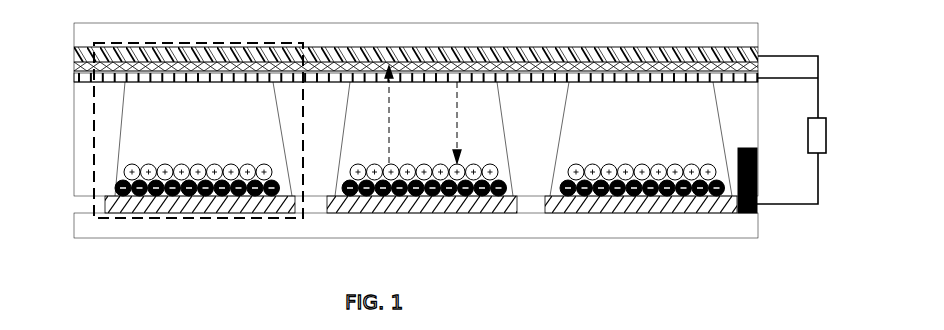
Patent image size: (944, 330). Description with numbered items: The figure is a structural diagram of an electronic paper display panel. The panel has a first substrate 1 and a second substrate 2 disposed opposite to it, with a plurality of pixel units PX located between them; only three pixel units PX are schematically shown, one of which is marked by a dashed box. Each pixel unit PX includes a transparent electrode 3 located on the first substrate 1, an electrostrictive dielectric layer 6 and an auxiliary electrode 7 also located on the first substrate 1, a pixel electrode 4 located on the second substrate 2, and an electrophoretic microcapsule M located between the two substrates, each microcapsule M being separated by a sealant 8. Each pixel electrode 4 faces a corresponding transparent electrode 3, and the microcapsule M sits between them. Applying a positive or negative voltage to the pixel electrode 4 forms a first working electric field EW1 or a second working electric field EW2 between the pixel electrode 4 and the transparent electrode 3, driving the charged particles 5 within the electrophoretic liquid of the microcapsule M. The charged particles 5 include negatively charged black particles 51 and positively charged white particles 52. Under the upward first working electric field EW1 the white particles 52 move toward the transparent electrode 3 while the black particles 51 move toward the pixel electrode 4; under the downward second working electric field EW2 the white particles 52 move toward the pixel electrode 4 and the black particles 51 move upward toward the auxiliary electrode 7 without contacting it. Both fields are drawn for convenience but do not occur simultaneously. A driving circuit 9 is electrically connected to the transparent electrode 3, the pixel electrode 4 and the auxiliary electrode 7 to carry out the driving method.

The first substrate 1 is at (88, 33).
The second substrate 2 is at (88, 228).
The transparent electrode 3 is at (78, 54).
The pixel electrode 4 is at (110, 210).
The charged particles 5 is at (362, 169).
The negatively charged black particles 51 is at (118, 190).
The positively charged white particles 52 is at (125, 170).
The electrostrictive dielectric layer 6 is at (78, 68).
The auxiliary electrode 7 is at (78, 80).
The sealant 8 is at (88, 132).
The driving circuit 9 is at (791, 130).
The pixel unit PX is at (93, 122).
The electrophoretic microcapsule M is at (725, 137).
The first working electric field EW1 is at (373, 114).
The second working electric field EW2 is at (471, 122).